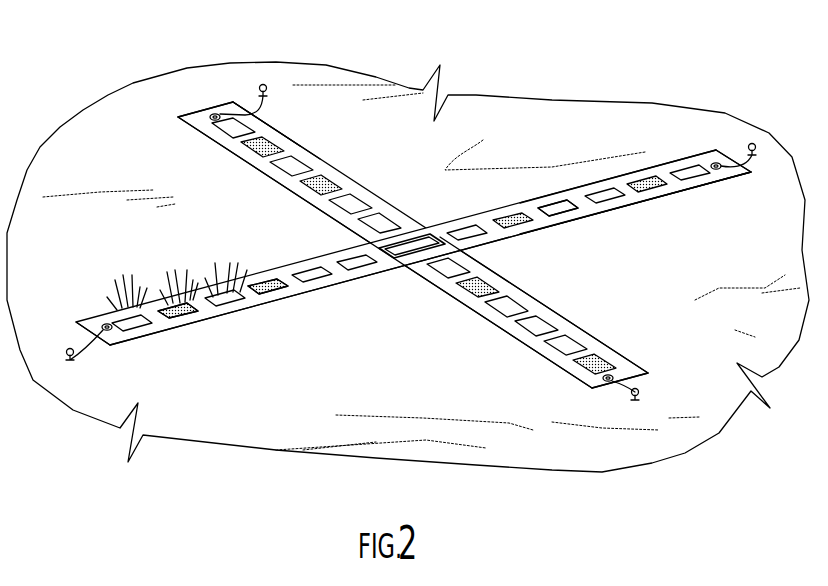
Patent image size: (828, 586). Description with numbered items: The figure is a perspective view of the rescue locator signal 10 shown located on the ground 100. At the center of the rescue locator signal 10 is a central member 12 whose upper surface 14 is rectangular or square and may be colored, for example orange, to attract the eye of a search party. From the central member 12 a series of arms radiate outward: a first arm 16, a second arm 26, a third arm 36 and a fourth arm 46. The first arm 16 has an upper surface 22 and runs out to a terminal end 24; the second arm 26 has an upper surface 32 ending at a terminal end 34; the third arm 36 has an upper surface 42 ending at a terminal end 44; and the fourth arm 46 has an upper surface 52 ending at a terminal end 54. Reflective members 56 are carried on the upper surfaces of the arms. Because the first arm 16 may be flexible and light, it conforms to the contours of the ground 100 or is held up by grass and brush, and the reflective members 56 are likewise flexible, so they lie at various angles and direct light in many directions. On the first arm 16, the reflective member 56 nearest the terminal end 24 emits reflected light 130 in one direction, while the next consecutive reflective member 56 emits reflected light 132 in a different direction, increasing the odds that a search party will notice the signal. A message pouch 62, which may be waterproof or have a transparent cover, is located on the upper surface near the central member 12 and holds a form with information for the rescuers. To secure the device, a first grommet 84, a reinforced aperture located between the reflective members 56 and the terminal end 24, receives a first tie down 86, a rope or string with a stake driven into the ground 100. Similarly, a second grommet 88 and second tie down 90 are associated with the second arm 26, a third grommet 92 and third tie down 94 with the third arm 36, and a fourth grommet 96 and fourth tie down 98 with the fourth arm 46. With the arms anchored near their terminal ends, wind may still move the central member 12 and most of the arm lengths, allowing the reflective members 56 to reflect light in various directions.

The rescue locator signal 10 is at (118, 122).
The ground 100 is at (593, 80).
The central member 12 is at (417, 230).
The upper surface of the central member 14 is at (404, 222).
The first arm 16 is at (330, 289).
The upper surface of the first arm 22 is at (281, 266).
The terminal end of the first arm 24 is at (99, 341).
The second arm 26 is at (630, 205).
The upper surface of the second arm 32 is at (661, 166).
The terminal end of the second arm 34 is at (720, 150).
The third arm 36 is at (320, 165).
The upper surface of the third arm 42 is at (290, 142).
The terminal end of the third arm 44 is at (220, 108).
The fourth arm 46 is at (592, 338).
The upper surface of the fourth arm 52 is at (562, 318).
The terminal end of the fourth arm 54 is at (615, 385).
The reflective members 56 is at (556, 208).
The message pouch 62 is at (400, 250).
The first grommet 84 is at (103, 324).
The first tie down 86 is at (66, 348).
The second grommet 88 is at (719, 172).
The second tie down 90 is at (757, 153).
The third grommet 92 is at (210, 114).
The third tie down 94 is at (260, 84).
The fourth grommet 96 is at (602, 384).
The fourth tie down 98 is at (620, 400).
The reflected light 130 is at (107, 288).
The reflected light 132 is at (200, 303).